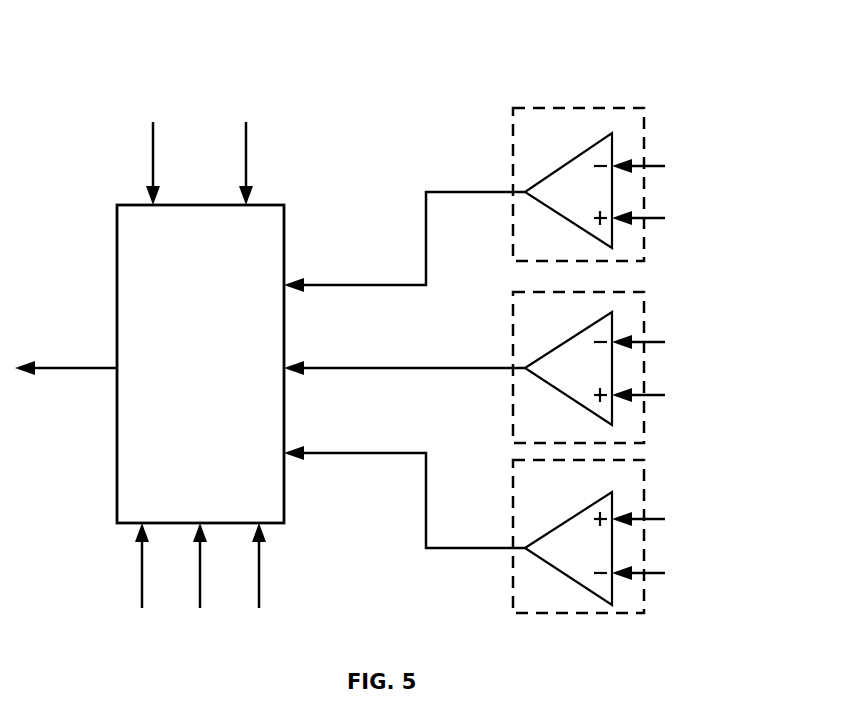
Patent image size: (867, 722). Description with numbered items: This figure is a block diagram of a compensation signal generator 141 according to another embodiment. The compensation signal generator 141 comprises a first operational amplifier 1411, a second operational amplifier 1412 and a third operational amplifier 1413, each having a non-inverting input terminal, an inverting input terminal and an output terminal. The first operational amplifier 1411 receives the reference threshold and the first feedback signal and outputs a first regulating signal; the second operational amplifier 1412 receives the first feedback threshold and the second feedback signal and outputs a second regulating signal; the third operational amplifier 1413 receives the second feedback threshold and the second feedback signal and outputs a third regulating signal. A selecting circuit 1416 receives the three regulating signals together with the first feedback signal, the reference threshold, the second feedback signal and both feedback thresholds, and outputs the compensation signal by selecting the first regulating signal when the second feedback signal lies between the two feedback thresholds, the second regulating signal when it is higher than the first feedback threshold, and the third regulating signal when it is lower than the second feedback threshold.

The compensation signal generator 141 is at (685, 62).
The first operational amplifier 1411 is at (513, 146).
The second operational amplifier 1412 is at (513, 326).
The third operational amplifier 1413 is at (513, 498).
The selecting circuit 1416 is at (117, 272).